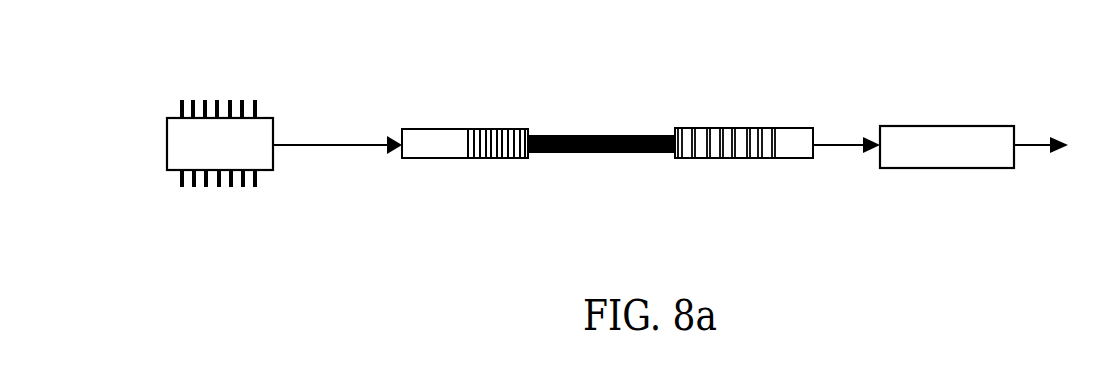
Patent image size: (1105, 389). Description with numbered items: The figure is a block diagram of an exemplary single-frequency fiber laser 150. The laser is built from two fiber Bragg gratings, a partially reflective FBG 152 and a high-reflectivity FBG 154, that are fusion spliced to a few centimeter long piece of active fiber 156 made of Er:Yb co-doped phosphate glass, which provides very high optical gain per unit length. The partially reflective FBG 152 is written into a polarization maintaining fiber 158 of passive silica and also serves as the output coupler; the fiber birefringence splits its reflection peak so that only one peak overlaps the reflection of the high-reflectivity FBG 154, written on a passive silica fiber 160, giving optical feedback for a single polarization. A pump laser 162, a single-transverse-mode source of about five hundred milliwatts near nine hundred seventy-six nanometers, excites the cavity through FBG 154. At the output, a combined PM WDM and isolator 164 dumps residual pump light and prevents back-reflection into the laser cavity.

The single-frequency fiber laser 150 is at (822, 73).
The partially reflective fiber Bragg grating 152 is at (722, 128).
The high-reflectivity fiber Bragg grating 154 is at (495, 129).
The active fiber 156 is at (625, 132).
The polarization maintaining fiber 158 is at (795, 148).
The fiber 160 is at (423, 146).
The pump laser 162 is at (260, 117).
The PM WDM and isolator 164 is at (953, 130).